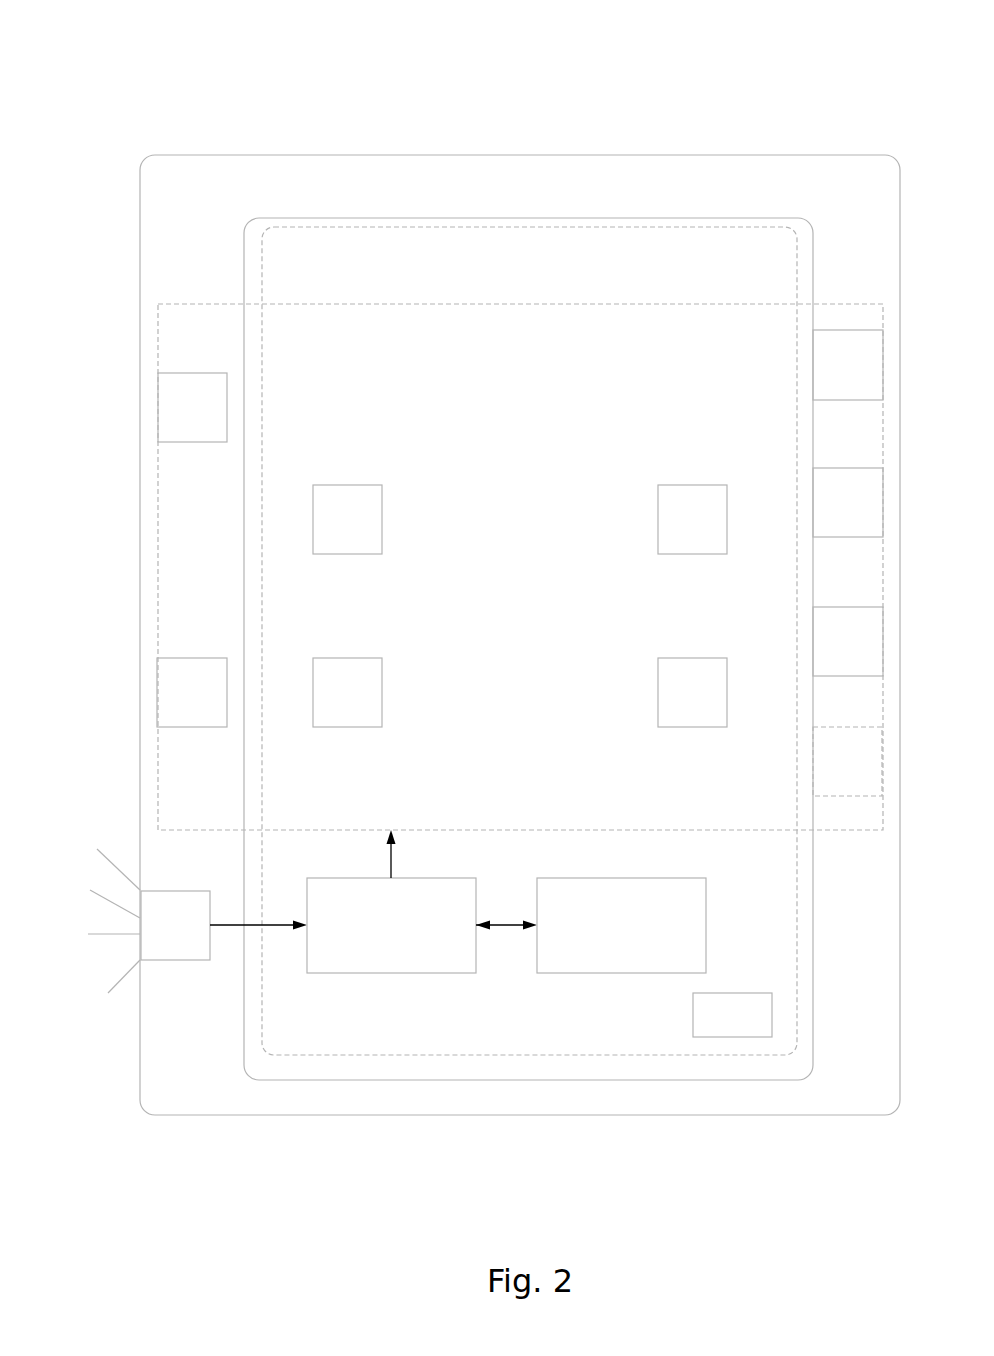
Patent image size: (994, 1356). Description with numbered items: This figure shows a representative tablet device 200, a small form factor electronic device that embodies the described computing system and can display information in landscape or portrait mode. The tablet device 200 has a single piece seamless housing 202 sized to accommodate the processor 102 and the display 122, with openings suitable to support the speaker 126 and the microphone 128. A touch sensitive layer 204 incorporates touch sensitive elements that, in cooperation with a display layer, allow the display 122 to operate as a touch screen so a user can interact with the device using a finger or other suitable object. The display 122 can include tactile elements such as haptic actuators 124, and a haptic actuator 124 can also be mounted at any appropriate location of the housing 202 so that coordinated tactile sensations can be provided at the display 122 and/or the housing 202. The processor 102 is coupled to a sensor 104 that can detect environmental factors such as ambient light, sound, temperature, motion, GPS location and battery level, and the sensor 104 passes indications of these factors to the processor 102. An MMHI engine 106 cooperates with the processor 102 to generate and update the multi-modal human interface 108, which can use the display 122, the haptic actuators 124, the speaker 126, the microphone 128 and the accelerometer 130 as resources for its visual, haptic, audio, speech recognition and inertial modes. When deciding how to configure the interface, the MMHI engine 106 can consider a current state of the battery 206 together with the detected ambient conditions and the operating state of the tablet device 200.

The tablet device 200 is at (341, 98).
The single piece seamless housing 202 is at (514, 1121).
The touch sensitive layer 204 is at (444, 232).
The multi-modal human interface (MMHI) 108 is at (151, 303).
The microphone 128 is at (192, 407).
The speaker 126 is at (520, 528).
The accelerometer 130 is at (848, 502).
The display 122 is at (800, 463).
The haptic actuator 124 is at (597, 640).
The sensor 104 is at (174, 918).
The processor 102 is at (422, 901).
The multi-modal human interface (MMHI) engine 106 is at (621, 925).
The battery 206 is at (732, 1015).